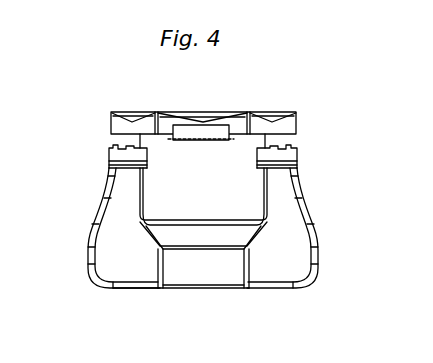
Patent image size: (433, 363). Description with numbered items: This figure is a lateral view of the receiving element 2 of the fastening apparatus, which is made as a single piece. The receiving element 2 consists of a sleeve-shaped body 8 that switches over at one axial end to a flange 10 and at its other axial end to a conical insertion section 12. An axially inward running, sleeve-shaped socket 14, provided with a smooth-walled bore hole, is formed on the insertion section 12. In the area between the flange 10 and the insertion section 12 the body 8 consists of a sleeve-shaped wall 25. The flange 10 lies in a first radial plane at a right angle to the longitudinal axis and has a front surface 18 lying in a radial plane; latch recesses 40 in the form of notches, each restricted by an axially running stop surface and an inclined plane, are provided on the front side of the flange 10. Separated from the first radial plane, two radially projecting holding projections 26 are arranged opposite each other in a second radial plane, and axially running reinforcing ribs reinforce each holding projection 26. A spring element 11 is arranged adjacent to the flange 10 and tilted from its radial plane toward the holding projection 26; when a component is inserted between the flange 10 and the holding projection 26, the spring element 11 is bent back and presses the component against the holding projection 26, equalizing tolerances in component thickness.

The receiving element 2 is at (133, 299).
The sleeve-shaped body 8 is at (250, 208).
The flange 10 is at (290, 123).
The spring element 11 is at (220, 130).
The conical insertion section 12 is at (240, 233).
The sleeve-shaped socket 14 is at (228, 277).
The front surface 18 is at (184, 112).
The sleeve-shaped wall 25 is at (137, 213).
The holding projection 26 is at (293, 157).
The latch recess 40 is at (152, 112).